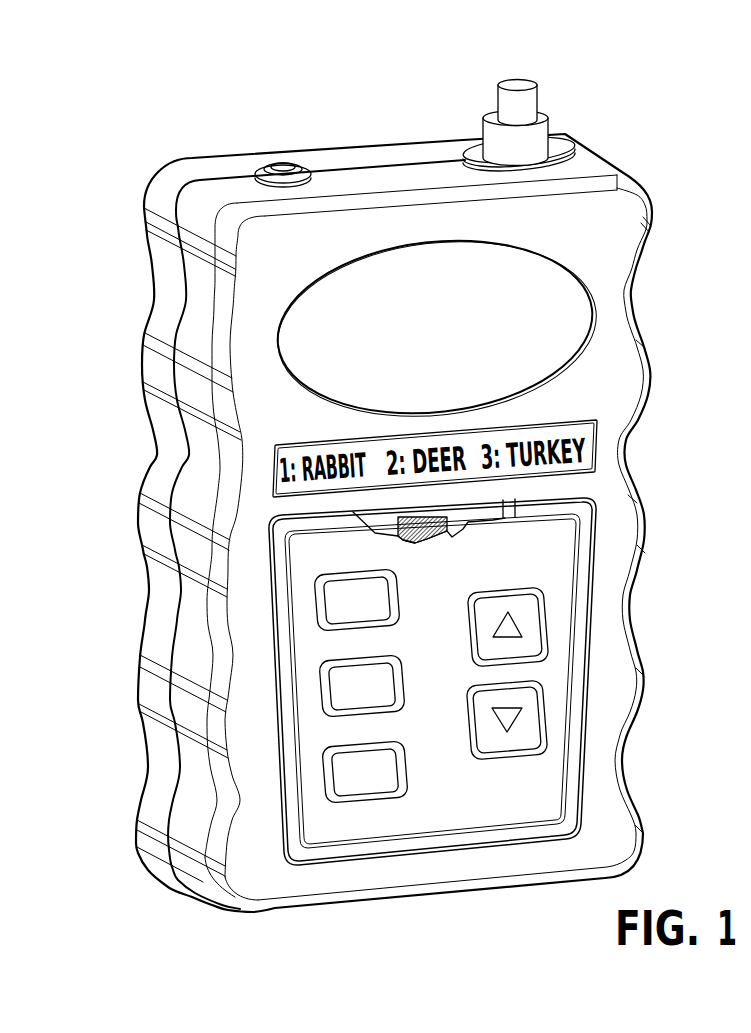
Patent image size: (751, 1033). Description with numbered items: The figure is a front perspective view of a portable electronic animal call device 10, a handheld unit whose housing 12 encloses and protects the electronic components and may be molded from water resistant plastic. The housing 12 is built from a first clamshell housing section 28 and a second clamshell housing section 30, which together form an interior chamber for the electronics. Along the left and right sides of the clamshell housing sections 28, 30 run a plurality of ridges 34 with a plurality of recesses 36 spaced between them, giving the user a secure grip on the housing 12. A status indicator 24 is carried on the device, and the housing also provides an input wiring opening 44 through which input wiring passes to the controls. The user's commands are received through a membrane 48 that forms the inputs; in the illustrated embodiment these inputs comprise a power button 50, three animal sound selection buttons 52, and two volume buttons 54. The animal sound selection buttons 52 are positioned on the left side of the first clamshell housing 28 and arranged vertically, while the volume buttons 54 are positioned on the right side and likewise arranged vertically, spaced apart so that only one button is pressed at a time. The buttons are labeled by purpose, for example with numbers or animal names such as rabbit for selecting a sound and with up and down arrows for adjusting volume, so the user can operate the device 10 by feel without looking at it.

The portable electronic animal call device 10 is at (157, 120).
The housing 12 is at (115, 185).
The status indicator 24 is at (277, 160).
The first clamshell housing section 28 is at (667, 252).
The second clamshell housing section 30 is at (125, 763).
The ridges 34 is at (160, 366).
The recesses 36 is at (172, 447).
The input wiring opening 44 is at (473, 510).
The membrane 48 is at (563, 612).
The power button 50 is at (473, 93).
The animal sound selection buttons 52 is at (327, 788).
The volume buttons 54 is at (522, 638).